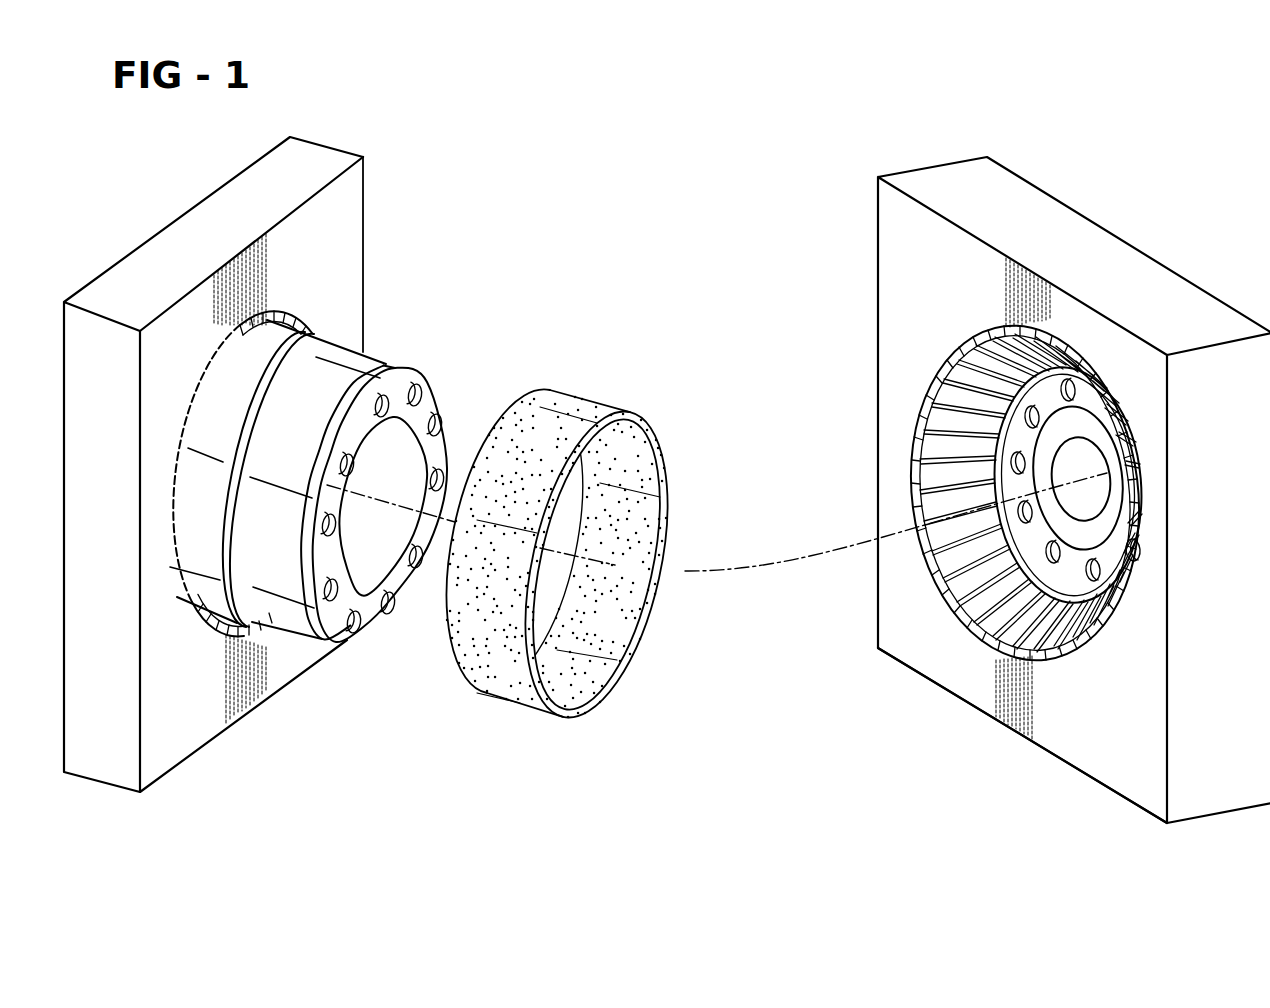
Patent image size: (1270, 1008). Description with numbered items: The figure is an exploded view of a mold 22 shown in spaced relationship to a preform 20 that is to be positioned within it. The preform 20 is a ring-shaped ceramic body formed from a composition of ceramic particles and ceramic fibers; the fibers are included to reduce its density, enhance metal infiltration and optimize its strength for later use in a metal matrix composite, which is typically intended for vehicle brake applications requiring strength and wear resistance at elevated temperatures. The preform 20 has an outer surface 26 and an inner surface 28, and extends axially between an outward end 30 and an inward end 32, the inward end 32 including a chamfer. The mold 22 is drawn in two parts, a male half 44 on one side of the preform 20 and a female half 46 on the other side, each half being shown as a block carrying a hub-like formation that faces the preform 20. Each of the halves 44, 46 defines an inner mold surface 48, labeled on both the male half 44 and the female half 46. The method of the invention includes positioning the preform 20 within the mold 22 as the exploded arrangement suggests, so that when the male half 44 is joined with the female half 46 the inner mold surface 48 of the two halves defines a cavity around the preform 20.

The preform 20 is at (546, 539).
The mold 22 is at (323, 117).
The outer surface 26 is at (472, 633).
The inner surface 28 is at (580, 634).
The outward end 30 is at (500, 440).
The inward end 32 is at (670, 503).
The male half 44 is at (290, 590).
The female half 46 is at (1118, 676).
The inner mold surface 48 is at (310, 454).